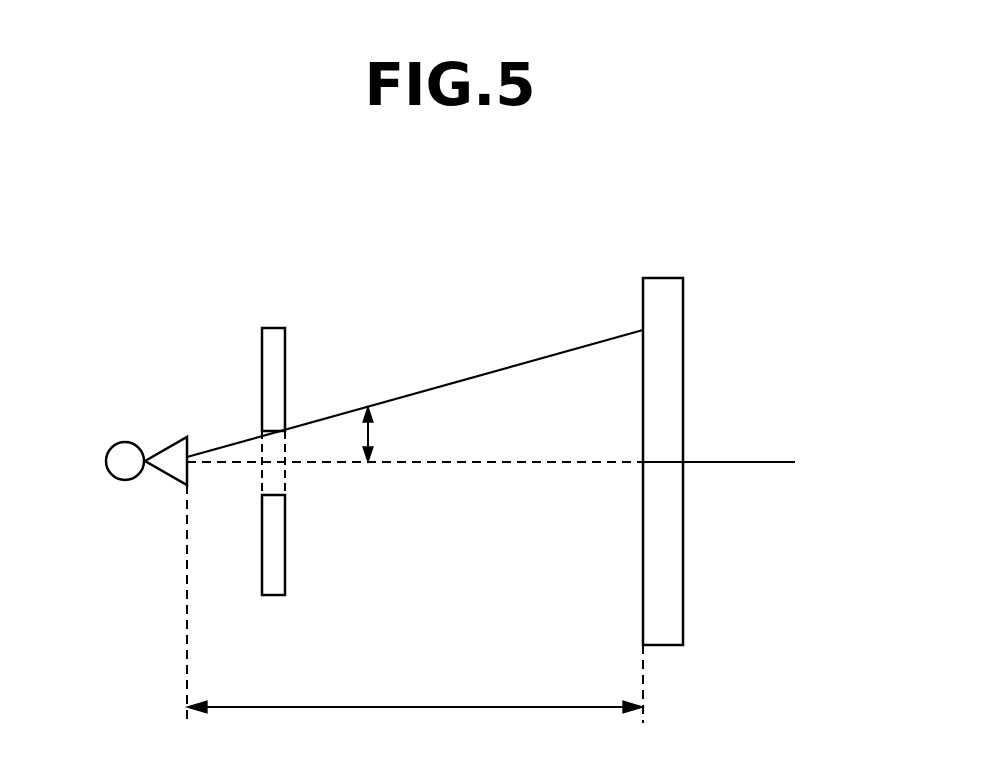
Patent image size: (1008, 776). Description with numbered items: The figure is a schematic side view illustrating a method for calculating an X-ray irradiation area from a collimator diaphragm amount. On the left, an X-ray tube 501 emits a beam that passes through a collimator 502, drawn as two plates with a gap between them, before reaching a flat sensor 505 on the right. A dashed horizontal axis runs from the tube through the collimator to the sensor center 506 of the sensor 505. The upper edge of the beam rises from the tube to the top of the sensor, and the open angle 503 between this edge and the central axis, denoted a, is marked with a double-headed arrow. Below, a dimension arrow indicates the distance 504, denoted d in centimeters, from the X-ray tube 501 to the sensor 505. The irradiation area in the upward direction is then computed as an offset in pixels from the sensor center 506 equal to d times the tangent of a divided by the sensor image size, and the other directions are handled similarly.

The X-ray tube 501 is at (125, 441).
The collimator 502 is at (274, 328).
The open angle 503 is at (372, 433).
The distance 504 is at (343, 707).
The sensor 505 is at (664, 278).
The sensor center 506 is at (663, 462).